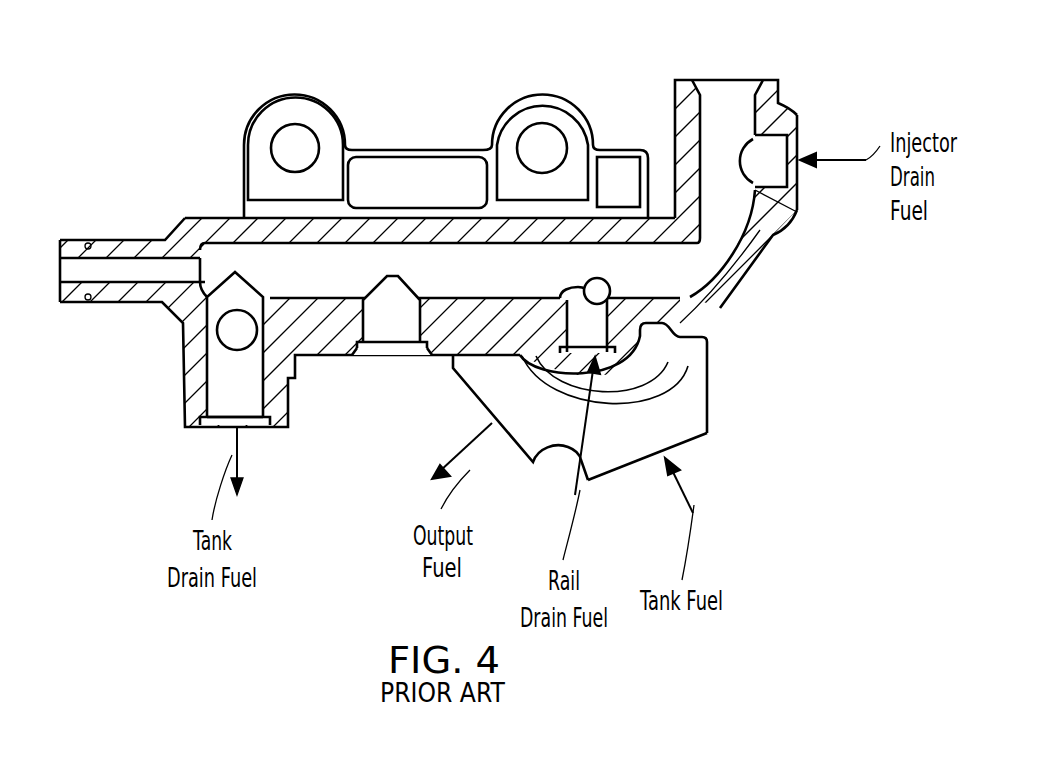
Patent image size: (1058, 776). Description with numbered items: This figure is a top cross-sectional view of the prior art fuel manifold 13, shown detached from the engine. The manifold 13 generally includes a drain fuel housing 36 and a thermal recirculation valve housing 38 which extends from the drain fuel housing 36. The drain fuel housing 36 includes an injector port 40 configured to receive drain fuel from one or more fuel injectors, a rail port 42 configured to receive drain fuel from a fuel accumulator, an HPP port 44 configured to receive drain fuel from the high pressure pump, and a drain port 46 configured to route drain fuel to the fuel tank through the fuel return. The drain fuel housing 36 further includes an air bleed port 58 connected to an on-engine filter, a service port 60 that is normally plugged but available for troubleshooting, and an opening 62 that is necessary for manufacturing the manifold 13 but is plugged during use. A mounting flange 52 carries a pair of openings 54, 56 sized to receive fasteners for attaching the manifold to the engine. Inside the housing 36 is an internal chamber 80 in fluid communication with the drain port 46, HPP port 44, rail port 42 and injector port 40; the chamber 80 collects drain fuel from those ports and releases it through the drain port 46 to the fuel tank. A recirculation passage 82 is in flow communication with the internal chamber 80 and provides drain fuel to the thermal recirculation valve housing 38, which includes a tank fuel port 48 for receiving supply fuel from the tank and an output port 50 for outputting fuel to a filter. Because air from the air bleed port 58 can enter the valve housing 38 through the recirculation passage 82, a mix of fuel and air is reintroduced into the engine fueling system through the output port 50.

The prior art fuel manifold 13 is at (115, 114).
The drain fuel housing 36 is at (198, 182).
The thermal recirculation valve housing 38 is at (722, 374).
The injector port 40 is at (787, 112).
The rail port 42 is at (590, 343).
The HPP port 44 is at (232, 329).
The drain port 46 is at (207, 428).
The tank fuel port 48 is at (700, 427).
The output port 50 is at (542, 452).
The mounting flange 52 is at (420, 158).
The opening 54 is at (293, 148).
The opening 56 is at (541, 148).
The air bleed port 58 is at (73, 252).
The service port 60 is at (390, 347).
The opening 62 is at (728, 80).
The internal chamber 80 is at (343, 287).
The recirculation passage 82 is at (612, 291).